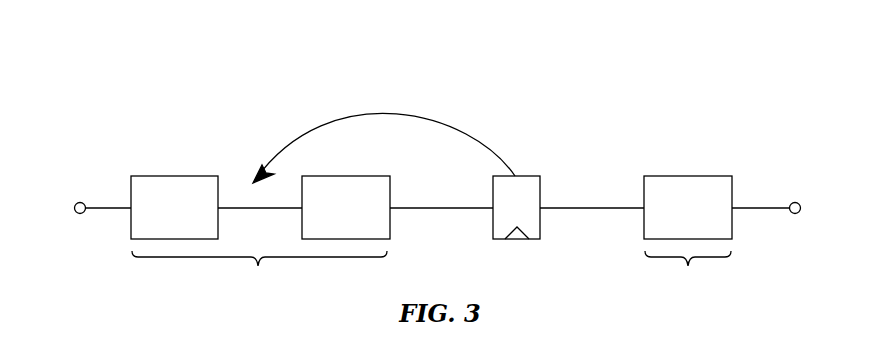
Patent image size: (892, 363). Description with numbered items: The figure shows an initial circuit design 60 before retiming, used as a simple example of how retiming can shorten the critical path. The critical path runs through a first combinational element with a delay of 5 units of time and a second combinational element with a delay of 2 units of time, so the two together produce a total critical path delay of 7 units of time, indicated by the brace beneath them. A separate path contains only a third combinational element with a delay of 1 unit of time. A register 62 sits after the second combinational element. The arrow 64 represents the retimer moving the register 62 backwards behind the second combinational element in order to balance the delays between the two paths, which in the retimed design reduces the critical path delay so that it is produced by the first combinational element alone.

The initial circuit design 60 is at (607, 60).
The arrow 64 is at (394, 103).
The register 62 is at (540, 176).
The delay of first combinational element C1 5 is at (174, 193).
The delay of second combinational element C2 2 is at (346, 193).
The critical path delay 7 is at (259, 270).
The delay of third combinational element C3 1 is at (688, 219).